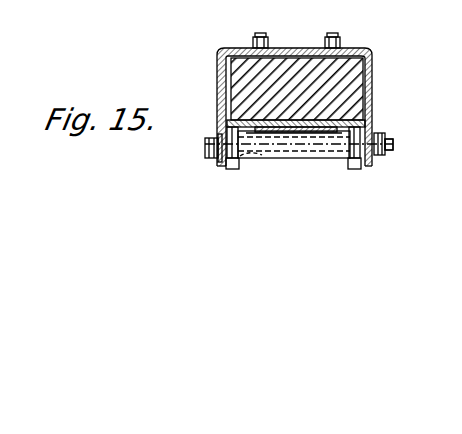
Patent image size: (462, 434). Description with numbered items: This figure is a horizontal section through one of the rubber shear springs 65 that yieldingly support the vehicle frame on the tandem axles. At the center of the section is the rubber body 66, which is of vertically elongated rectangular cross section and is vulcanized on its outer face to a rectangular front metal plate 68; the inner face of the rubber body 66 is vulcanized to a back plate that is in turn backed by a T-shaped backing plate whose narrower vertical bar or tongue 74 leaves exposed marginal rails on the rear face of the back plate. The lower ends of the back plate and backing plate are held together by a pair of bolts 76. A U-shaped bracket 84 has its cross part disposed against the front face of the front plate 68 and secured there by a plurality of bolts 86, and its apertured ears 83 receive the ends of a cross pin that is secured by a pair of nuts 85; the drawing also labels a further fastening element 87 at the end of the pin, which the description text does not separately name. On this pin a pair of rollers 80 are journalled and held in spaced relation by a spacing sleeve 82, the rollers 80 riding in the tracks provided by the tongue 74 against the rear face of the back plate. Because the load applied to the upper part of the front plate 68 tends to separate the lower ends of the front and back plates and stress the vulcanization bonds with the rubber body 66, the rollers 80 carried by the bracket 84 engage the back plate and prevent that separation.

The rubber shear spring 65 is at (376, 97).
The rubber body 66 is at (372, 78).
The metal plate 68 is at (233, 48).
The vertical bar or tongue 74 is at (288, 136).
The bolts 76 is at (253, 156).
The rollers 80 is at (237, 172).
The spacing sleeve 82 is at (318, 160).
The apertured ears 83 is at (222, 112).
The U-shaped bracket 84 is at (357, 50).
The nuts 85 is at (208, 166).
The bolts 86 is at (327, 36).
The nut 87 is at (387, 154).